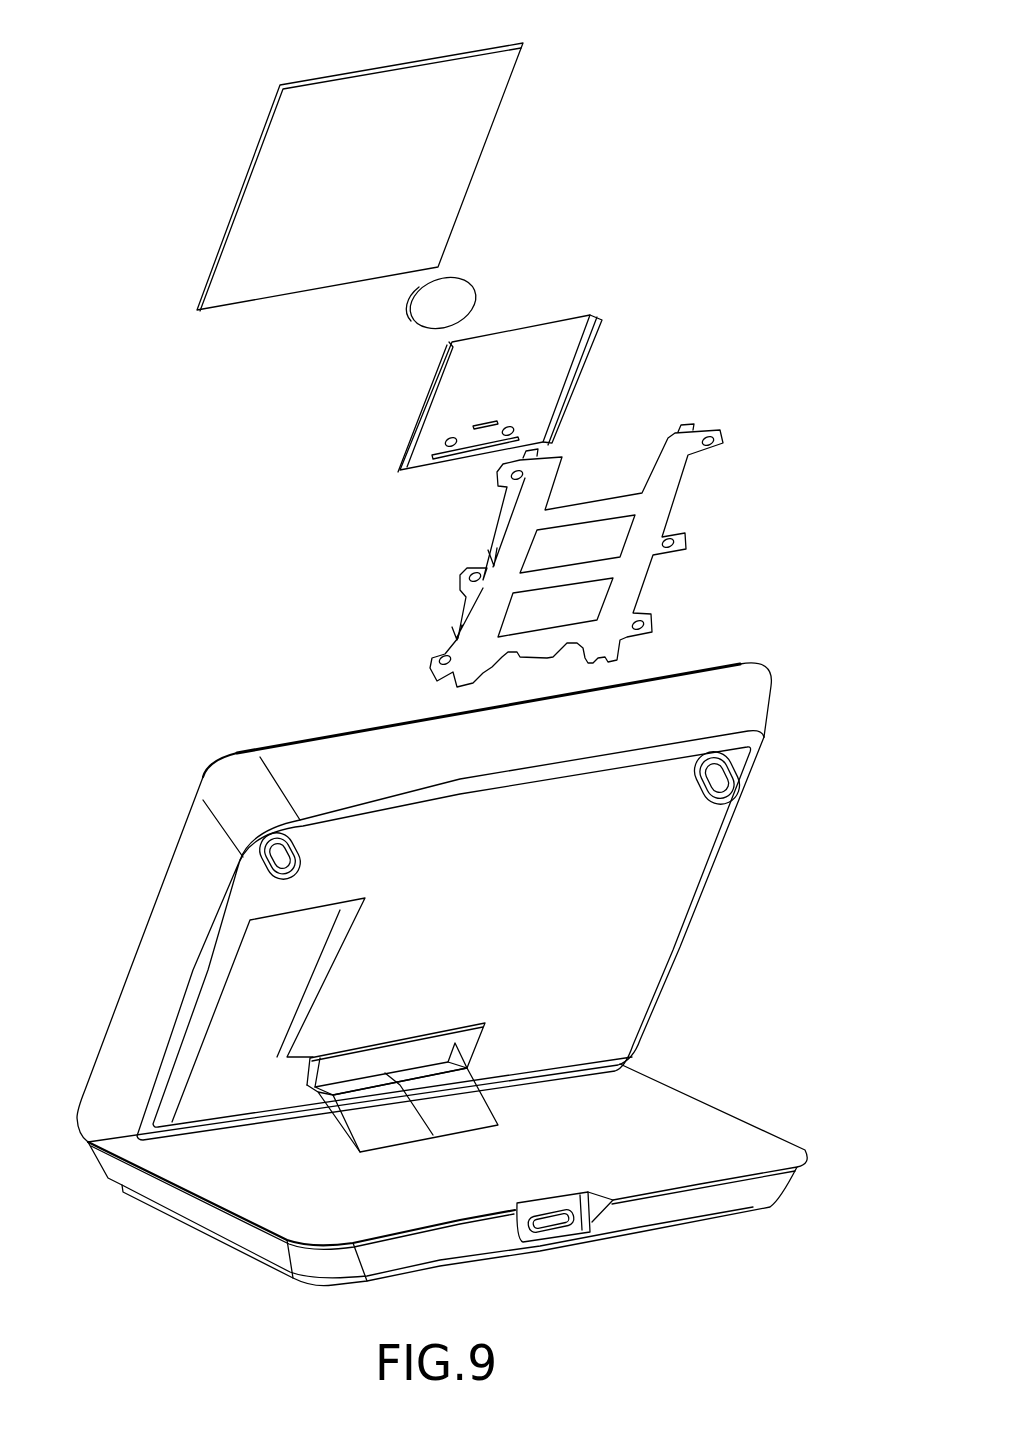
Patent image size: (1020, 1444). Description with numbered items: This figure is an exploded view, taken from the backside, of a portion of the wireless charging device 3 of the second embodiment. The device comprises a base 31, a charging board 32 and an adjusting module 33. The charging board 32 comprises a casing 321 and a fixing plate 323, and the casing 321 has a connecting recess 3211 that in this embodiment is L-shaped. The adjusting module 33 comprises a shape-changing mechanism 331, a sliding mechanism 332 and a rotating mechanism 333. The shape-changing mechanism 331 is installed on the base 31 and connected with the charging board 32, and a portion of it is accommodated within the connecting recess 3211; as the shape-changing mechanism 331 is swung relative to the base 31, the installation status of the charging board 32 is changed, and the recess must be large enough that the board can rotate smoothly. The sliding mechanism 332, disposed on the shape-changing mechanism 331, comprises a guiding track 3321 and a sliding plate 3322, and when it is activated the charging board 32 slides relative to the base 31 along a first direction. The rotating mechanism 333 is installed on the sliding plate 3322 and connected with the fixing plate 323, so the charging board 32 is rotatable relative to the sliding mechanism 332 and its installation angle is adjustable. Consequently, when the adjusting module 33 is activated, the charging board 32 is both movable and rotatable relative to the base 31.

The wireless charging device 3 is at (721, 156).
The base 31 is at (677, 1115).
The charging board 32 is at (395, 741).
The casing 321 is at (424, 902).
The connecting recess 3211 is at (242, 1068).
The fixing plate 323 is at (262, 195).
The adjusting module 33 is at (247, 452).
The shape-changing mechanism 331 is at (455, 1118).
The sliding mechanism 332 is at (653, 367).
The guiding track 3321 is at (513, 545).
The sliding plate 3322 is at (537, 332).
The rotating mechanism 333 is at (458, 297).